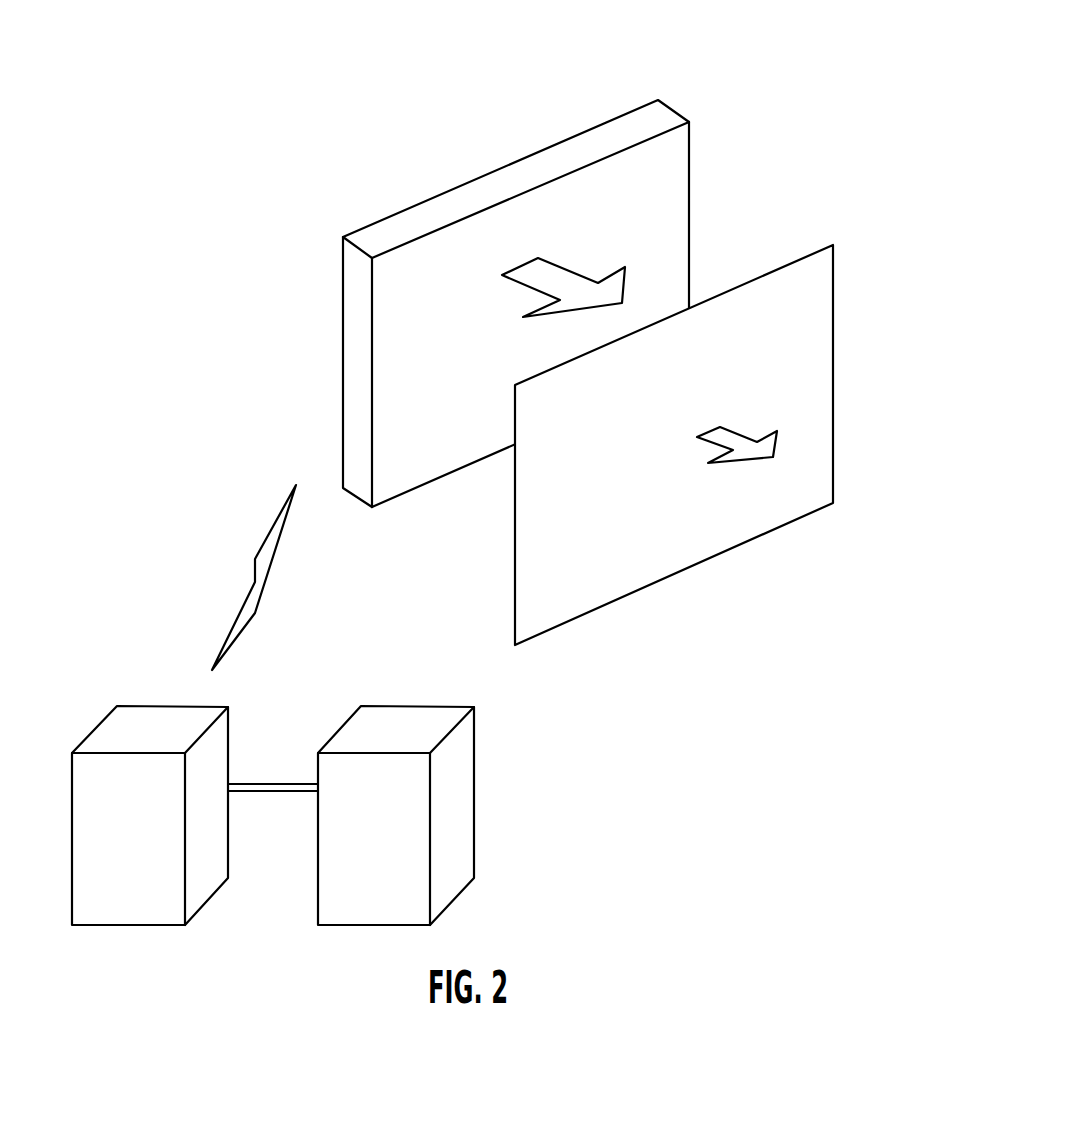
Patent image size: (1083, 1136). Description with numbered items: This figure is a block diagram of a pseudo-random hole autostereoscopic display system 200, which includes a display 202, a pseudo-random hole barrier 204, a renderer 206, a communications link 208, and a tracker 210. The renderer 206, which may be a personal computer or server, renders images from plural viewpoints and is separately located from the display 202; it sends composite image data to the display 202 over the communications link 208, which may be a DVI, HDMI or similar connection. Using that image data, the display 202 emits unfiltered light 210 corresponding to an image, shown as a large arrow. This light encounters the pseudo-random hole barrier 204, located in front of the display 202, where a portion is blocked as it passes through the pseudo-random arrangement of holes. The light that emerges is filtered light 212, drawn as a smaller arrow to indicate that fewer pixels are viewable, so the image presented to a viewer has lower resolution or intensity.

The pseudo-random hole AS display system 200 is at (168, 182).
The display 202 is at (694, 101).
The pseudo-random hole barrier 204 is at (857, 291).
The renderer 206 is at (88, 729).
The communications link 208 is at (250, 588).
The tracker 210 is at (563, 270).
The filtered light 212 is at (733, 428).